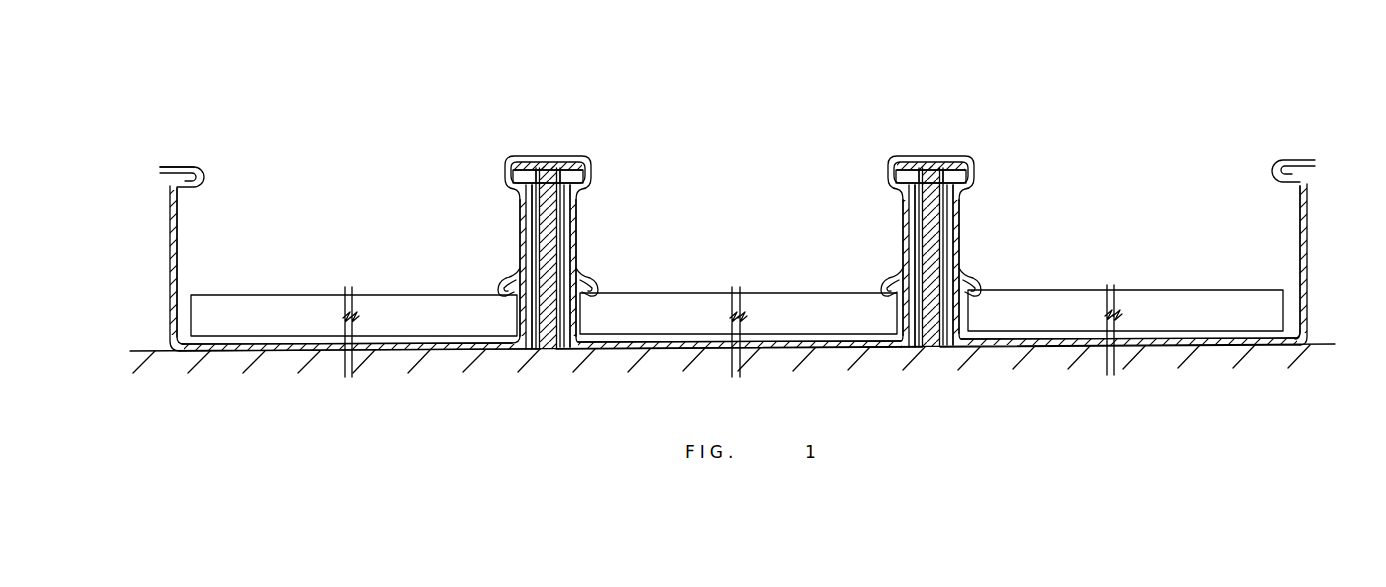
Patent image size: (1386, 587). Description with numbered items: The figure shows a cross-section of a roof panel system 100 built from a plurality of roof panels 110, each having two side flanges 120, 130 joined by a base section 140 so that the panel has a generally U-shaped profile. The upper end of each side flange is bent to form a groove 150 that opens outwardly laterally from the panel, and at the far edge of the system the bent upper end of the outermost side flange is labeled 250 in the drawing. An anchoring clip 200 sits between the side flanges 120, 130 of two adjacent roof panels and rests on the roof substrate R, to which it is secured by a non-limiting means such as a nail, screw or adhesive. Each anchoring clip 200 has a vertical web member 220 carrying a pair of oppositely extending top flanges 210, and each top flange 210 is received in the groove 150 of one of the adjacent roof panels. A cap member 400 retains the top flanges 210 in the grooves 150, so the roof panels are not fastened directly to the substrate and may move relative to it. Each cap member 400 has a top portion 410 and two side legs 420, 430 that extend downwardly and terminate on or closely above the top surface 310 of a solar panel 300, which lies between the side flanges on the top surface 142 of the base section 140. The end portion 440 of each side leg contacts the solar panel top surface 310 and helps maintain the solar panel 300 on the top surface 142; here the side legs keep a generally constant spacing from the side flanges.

The roof panel system 100 is at (412, 116).
The roof panel 110 is at (180, 238).
The side flange 120 is at (181, 262).
The side flange 130 is at (533, 246).
The base section 140 is at (265, 353).
The top surface of the base section 142 is at (428, 334).
The groove 150 is at (197, 174).
The anchoring clip 200 is at (548, 350).
The top flange 210 is at (565, 168).
The vertical web member 220 is at (545, 212).
The end hook 250 is at (1278, 172).
The solar panel 300 is at (291, 298).
The top surface of the solar panel 310 is at (400, 293).
The cap member 400 is at (587, 154).
The top portion 410 is at (537, 155).
The side leg 420 is at (524, 222).
The side leg 430 is at (578, 210).
The end portion 440 is at (500, 282).
The roof substrate R is at (1316, 344).